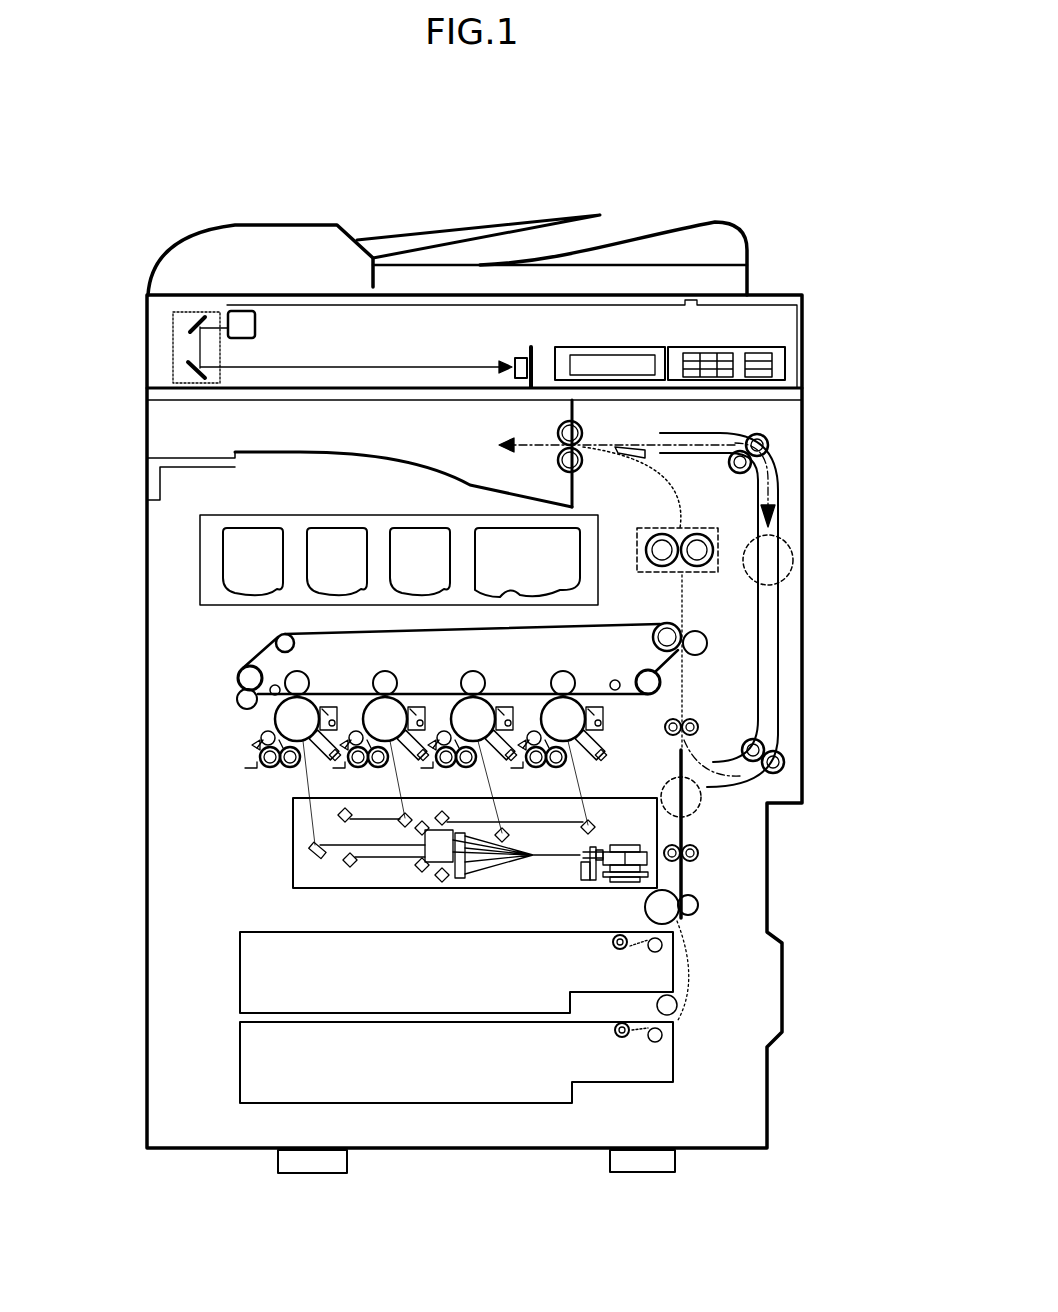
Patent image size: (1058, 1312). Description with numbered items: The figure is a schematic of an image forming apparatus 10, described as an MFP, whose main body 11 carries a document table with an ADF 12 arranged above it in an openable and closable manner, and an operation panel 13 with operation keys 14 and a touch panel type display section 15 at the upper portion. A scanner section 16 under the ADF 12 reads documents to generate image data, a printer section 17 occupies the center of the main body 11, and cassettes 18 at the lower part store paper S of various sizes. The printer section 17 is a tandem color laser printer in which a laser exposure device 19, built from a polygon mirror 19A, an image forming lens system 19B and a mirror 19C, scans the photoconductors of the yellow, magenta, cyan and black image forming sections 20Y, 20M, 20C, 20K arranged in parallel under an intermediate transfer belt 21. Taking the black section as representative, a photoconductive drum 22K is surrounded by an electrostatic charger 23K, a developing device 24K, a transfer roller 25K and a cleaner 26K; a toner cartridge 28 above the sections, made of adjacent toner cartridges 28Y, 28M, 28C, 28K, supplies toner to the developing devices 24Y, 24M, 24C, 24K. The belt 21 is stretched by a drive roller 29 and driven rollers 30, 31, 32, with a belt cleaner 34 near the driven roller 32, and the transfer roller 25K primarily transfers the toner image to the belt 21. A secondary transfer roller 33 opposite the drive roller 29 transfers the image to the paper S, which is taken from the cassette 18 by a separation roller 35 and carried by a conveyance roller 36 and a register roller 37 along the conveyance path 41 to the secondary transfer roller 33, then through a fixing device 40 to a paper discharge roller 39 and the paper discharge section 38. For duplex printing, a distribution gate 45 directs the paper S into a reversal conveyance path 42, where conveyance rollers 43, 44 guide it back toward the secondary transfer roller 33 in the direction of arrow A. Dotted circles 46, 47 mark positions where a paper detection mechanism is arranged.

The image forming apparatus 10 is at (670, 208).
The main body 11 is at (146, 808).
The ADF (Automatic Document Feeder) 12 is at (227, 257).
The operation panel 13 is at (786, 368).
The operation keys 14 is at (702, 358).
The display section 15 is at (610, 358).
The scanner section 16 is at (430, 337).
The printer section 17 is at (165, 630).
The cassettes 18 is at (240, 972).
The laser exposure device 19 is at (293, 862).
The polygon mirror 19A is at (622, 845).
The image forming lens system 19B is at (580, 872).
The mirror 19C is at (350, 870).
The yellow image forming section 20Y is at (324, 676).
The magenta image forming section 20M is at (417, 676).
The cyan image forming section 20C is at (492, 676).
The black image forming section 20K is at (595, 676).
The intermediate transfer belt 21 is at (258, 666).
The photoconductive drum 22K is at (585, 722).
The electrostatic charger 23K is at (598, 753).
The developing device 24Y is at (258, 768).
The developing device 24M is at (346, 768).
The developing device 24C is at (434, 768).
The developing device 24K is at (524, 768).
The transfer roller 25K is at (566, 670).
The cleaner 26K is at (603, 722).
The toner cartridge 28 is at (200, 568).
The yellow toner cartridge 28Y is at (253, 561).
The magenta toner cartridge 28M is at (337, 561).
The cyan toner cartridge 28C is at (420, 561).
The black toner cartridge 28K is at (527, 562).
The drive roller 29 is at (668, 623).
The driven roller 30 is at (290, 641).
The driven roller 31 is at (662, 682).
The driven roller 32 is at (238, 678).
The secondary transfer roller 33 is at (700, 632).
The belt cleaner 34 is at (242, 708).
The separation roller 35 is at (645, 907).
The conveyance roller 36 is at (700, 852).
The register roller 37 is at (698, 725).
The paper discharge section 38 is at (332, 452).
The paper discharge roller 39 is at (558, 462).
The fixing device 40 is at (700, 528).
The conveyance path 41 is at (658, 480).
The reversal conveyance path 42 is at (784, 632).
The conveyance roller 43 is at (770, 440).
The conveyance roller 44 is at (785, 752).
The distribution gate 45 is at (632, 450).
The dotted circle 46 is at (700, 803).
The dotted circle 47 is at (795, 557).
The arrow A is at (782, 490).
The paper S is at (684, 880).